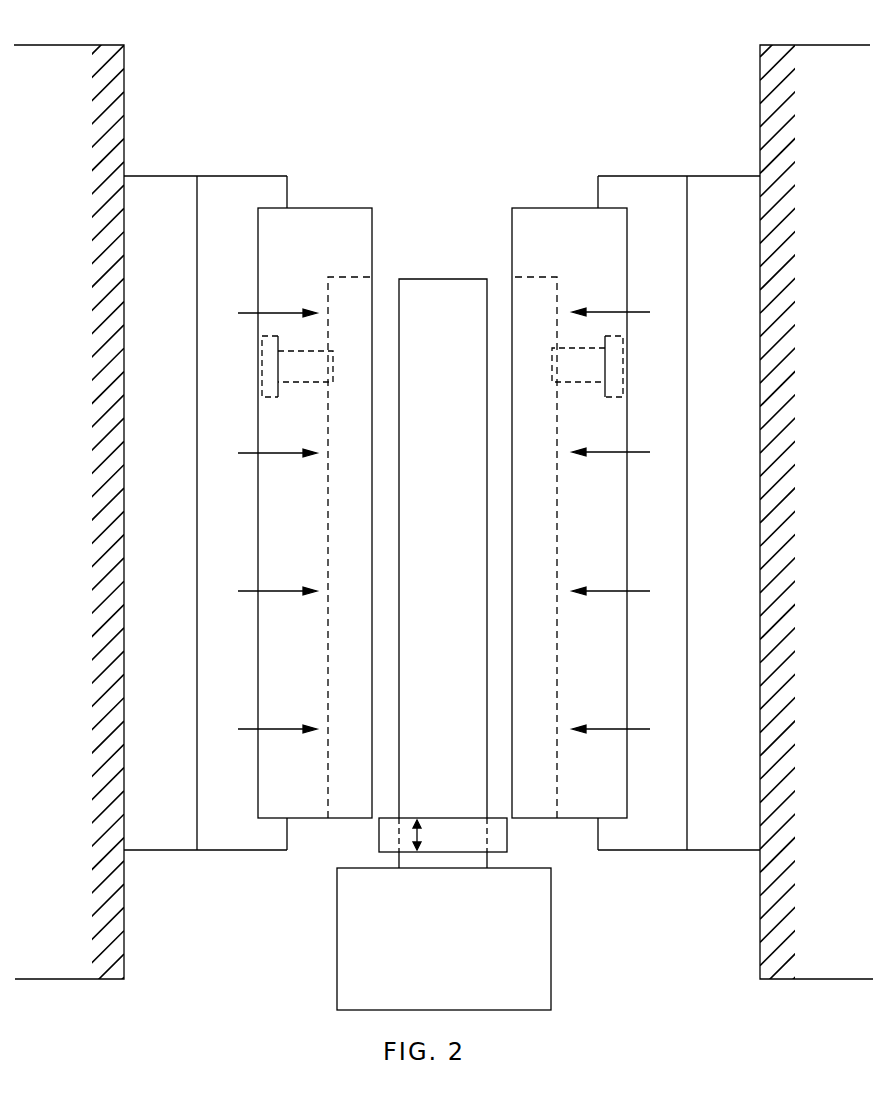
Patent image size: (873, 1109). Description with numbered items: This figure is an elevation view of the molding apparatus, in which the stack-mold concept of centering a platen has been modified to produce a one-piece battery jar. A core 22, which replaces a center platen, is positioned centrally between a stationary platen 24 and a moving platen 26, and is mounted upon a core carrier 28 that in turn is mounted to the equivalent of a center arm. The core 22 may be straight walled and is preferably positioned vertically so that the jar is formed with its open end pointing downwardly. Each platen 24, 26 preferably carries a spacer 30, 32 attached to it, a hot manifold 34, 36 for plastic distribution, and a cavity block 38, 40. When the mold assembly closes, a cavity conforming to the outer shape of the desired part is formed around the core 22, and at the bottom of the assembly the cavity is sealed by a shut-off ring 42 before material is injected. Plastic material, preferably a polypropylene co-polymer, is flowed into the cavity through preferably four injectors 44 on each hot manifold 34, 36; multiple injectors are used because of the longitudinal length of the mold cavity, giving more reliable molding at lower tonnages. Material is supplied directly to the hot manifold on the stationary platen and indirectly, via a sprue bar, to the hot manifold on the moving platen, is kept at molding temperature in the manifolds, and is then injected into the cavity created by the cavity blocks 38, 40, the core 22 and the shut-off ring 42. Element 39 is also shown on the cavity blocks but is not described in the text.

The core 22 is at (428, 312).
The stationary platen 24 is at (55, 68).
The moving platen 26 is at (818, 65).
The core carrier 28 is at (530, 928).
The spacer 30 is at (153, 200).
The spacer 32 is at (718, 195).
The hot manifold 34 is at (253, 195).
The hot manifold 36 is at (647, 195).
The cavity block 38 is at (335, 228).
The sensor 39 is at (302, 372).
The cavity block 40 is at (525, 248).
The shut-off ring 42 is at (387, 833).
The injectors 44 is at (250, 311).